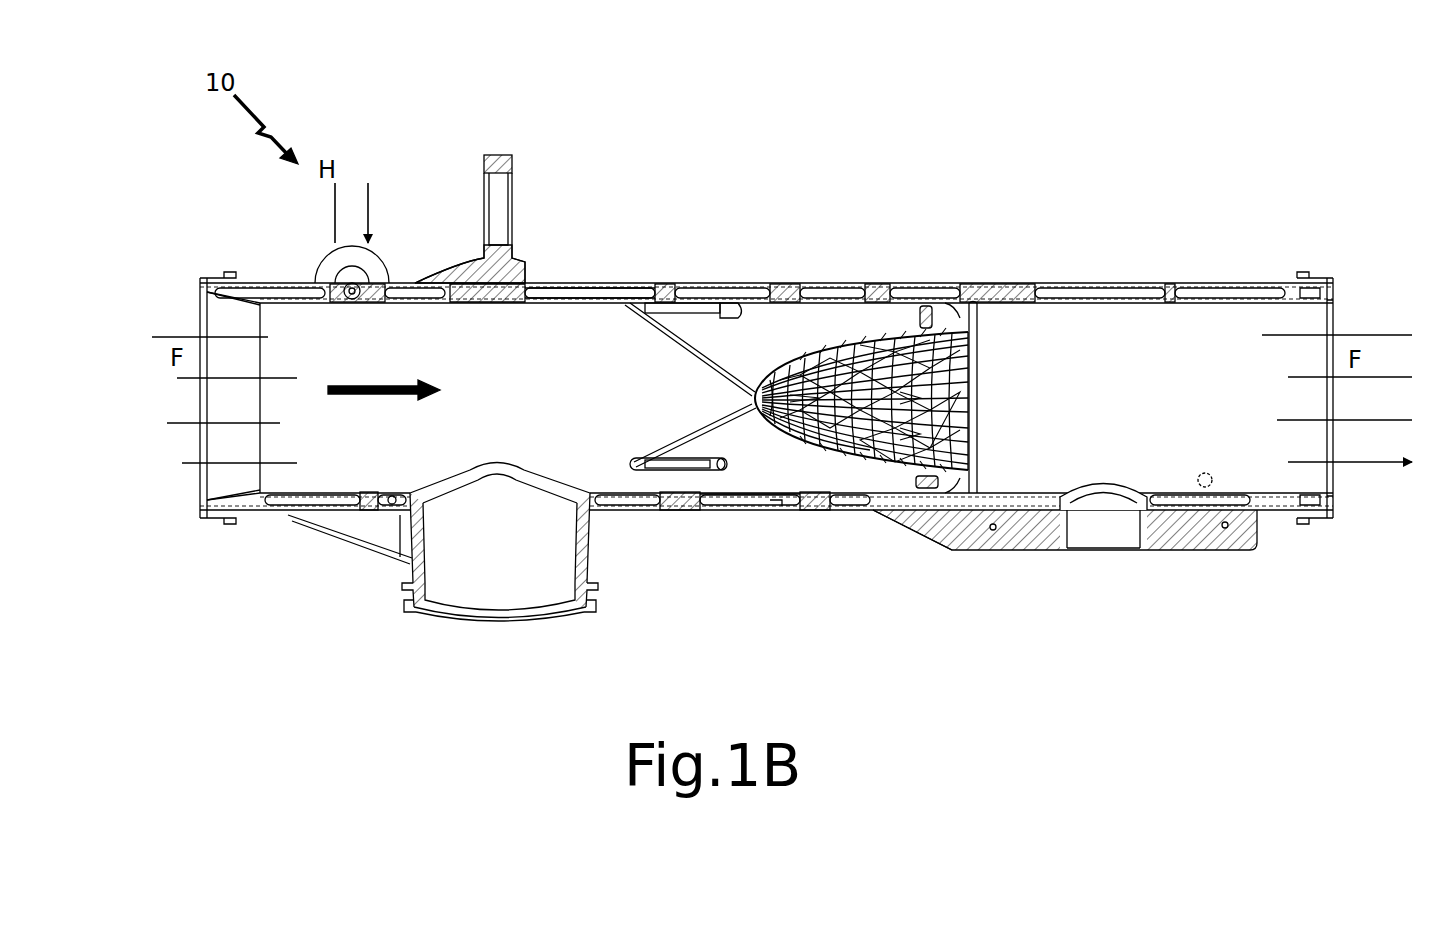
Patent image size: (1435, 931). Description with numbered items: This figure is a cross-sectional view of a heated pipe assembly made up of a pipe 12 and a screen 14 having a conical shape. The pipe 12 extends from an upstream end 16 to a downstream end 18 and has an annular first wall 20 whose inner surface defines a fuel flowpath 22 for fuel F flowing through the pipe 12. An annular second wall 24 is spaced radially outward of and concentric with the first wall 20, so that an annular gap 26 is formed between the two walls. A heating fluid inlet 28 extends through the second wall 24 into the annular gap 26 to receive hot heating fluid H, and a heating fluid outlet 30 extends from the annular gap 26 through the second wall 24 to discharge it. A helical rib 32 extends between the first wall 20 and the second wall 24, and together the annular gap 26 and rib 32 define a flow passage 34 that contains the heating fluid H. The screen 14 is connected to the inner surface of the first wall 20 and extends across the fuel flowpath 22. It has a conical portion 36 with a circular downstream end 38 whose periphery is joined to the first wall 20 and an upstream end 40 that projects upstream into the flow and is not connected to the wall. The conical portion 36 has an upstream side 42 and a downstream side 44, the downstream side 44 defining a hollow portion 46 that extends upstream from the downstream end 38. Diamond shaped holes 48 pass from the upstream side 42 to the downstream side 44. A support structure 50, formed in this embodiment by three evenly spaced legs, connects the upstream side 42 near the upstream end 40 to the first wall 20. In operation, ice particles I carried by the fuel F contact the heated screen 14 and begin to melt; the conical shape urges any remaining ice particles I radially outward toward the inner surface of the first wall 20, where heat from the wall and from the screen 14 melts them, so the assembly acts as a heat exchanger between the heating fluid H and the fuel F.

The pipe 12 is at (913, 238).
The screen 14 is at (860, 340).
The upstream end 16 is at (207, 505).
The downstream end 18 is at (1333, 505).
The first wall 20 is at (602, 300).
The fuel flowpath 22 is at (384, 380).
The second wall 24 is at (590, 292).
The annular gap 26 is at (565, 292).
The heating fluid inlet 28 is at (355, 288).
The heating fluid outlet 30 is at (1205, 472).
The rib 32 is at (785, 510).
The flow passage 34 is at (745, 505).
The conical portion 36 is at (860, 458).
The downstream end 38 is at (970, 376).
The upstream end 40 is at (750, 402).
The upstream side 42 is at (830, 452).
The downstream side 44 is at (968, 398).
The hollow portion 46 is at (965, 428).
The holes 48 is at (796, 380).
The support structure 50 is at (712, 440).
The ice particles I is at (945, 302).